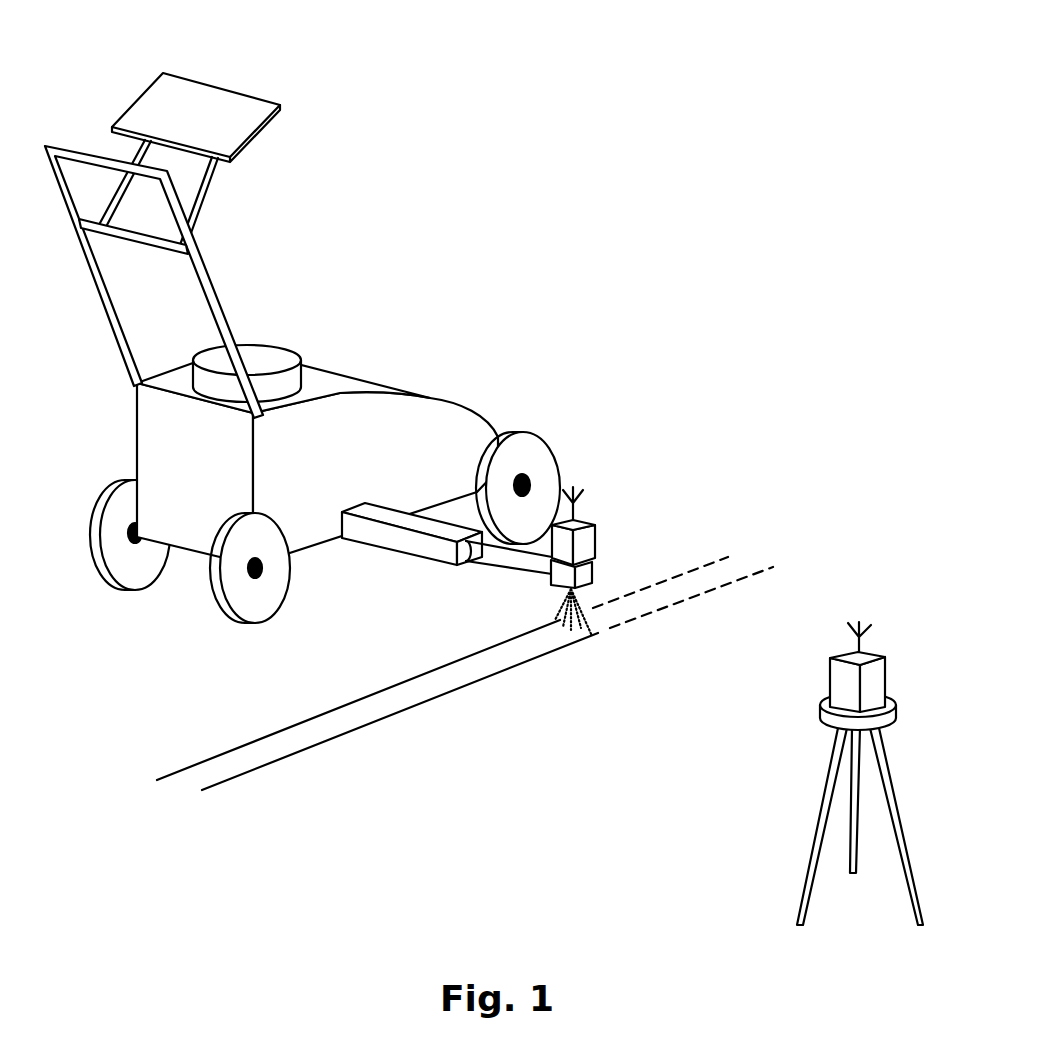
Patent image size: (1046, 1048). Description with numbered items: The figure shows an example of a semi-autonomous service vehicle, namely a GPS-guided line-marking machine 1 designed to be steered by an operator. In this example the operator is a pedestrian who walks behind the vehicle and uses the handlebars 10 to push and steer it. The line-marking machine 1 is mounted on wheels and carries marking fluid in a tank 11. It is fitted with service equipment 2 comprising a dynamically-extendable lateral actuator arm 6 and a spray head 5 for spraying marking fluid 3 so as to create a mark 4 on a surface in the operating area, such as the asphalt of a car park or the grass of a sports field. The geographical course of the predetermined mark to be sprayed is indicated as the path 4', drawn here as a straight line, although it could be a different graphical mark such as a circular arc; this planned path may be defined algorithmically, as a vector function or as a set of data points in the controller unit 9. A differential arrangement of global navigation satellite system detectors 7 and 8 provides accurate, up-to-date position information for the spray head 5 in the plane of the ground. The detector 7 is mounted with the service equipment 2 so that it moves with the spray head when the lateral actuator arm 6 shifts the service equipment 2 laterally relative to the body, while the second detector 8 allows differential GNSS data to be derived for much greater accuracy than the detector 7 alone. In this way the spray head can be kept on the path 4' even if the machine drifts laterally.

The line-marking machine 1 is at (415, 307).
The service equipment 2 is at (612, 527).
The marking fluid 3 is at (592, 617).
The mark 4 is at (372, 705).
The geographical course of the predetermined mark 4' is at (683, 531).
The spray head 5 is at (503, 562).
The lateral actuator arm 6 is at (433, 550).
The GNSS detector 7 is at (592, 553).
The second GNSS detector 8 is at (880, 677).
The controller unit 9 is at (243, 110).
The handlebars 10 is at (70, 150).
The tank 11 is at (258, 352).